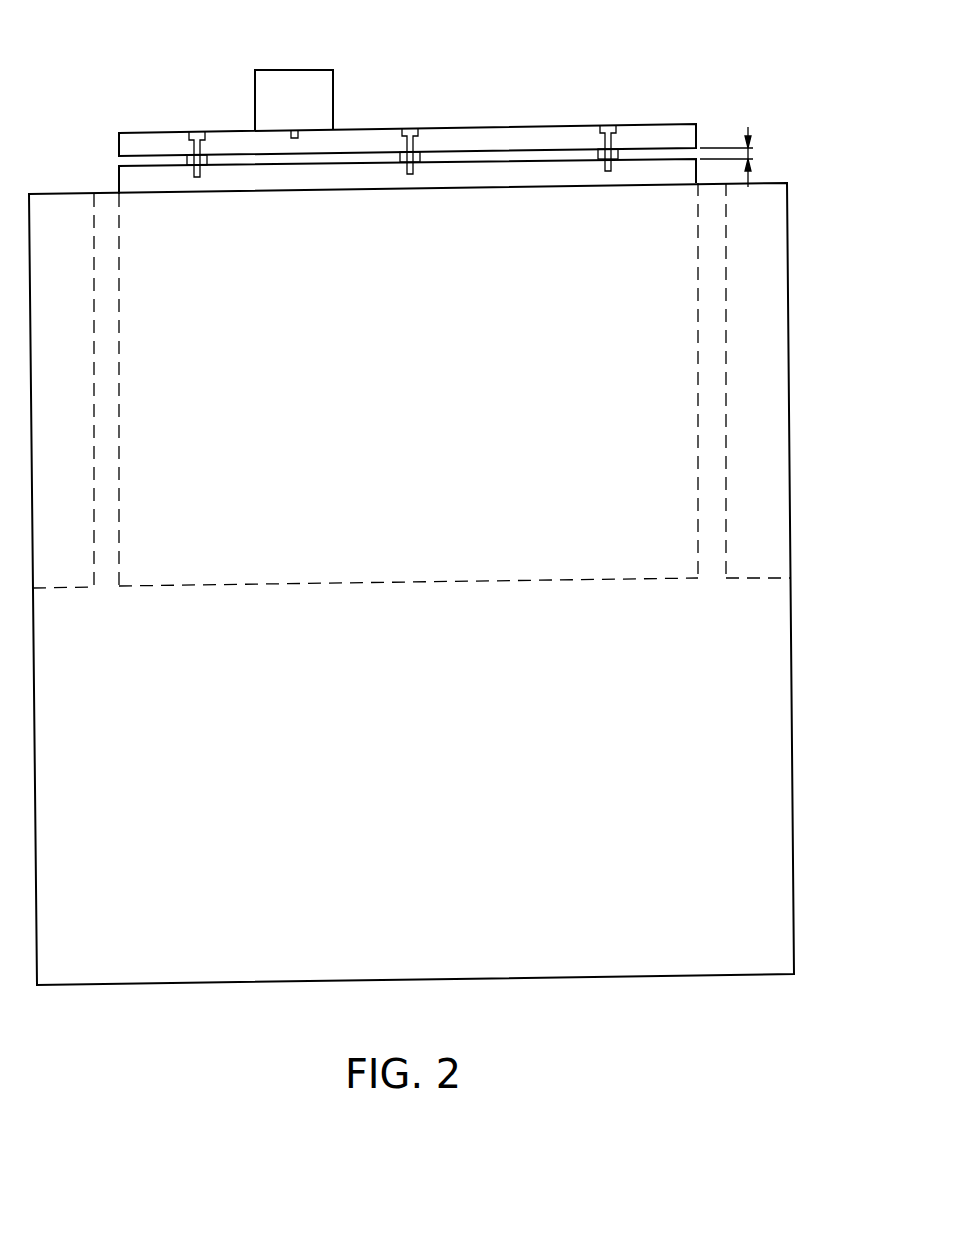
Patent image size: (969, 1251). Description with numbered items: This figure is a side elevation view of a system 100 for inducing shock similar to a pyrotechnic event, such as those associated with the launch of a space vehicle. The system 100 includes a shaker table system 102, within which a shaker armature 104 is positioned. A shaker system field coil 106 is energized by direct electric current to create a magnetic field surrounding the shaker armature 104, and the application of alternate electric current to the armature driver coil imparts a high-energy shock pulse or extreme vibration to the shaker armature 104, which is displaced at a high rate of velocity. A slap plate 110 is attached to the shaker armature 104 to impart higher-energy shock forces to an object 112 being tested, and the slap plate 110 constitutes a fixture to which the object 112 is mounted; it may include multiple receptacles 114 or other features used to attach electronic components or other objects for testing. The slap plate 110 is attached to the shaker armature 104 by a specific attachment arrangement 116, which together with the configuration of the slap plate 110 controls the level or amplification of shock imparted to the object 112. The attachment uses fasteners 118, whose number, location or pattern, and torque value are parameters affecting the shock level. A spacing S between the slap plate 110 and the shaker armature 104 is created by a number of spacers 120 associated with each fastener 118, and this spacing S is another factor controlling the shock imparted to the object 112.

The system 100 is at (454, 501).
The shaker table system 102 is at (784, 788).
The shaker armature 104 is at (124, 182).
The shaker system field coil 106 is at (780, 255).
The slap plate 110 is at (683, 136).
The object 112 is at (312, 70).
The receptacles 114 is at (296, 130).
The specific attachment arrangement 116 is at (403, 112).
The fasteners 118 is at (416, 116).
The spacers 120 is at (612, 138).
The spacing S is at (726, 136).